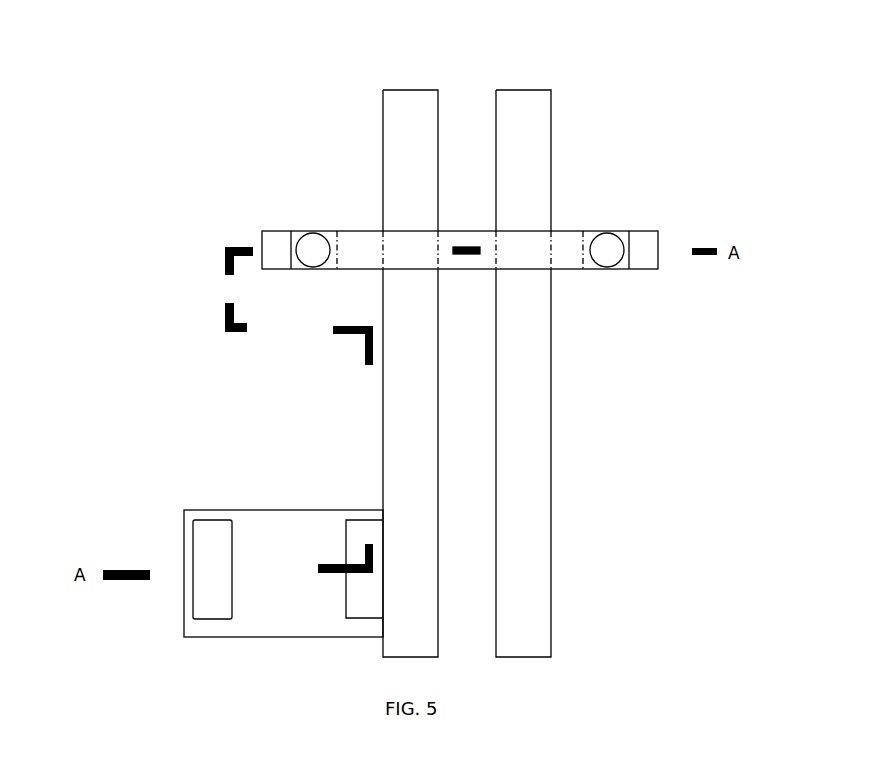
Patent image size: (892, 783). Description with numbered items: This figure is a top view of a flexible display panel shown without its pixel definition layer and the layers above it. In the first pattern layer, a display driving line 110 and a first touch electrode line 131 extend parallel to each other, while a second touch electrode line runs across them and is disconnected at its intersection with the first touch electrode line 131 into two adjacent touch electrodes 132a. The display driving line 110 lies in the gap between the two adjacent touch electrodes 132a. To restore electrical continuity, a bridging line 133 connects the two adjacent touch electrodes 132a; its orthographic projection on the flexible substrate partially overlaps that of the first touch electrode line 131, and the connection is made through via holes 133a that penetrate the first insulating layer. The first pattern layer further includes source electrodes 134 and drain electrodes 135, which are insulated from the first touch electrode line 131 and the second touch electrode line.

The display driving line 110 is at (383, 163).
The first touch electrode line 131 is at (551, 432).
The bridging line 133 is at (455, 230).
The touch electrodes 132a is at (273, 230).
The via holes 133a is at (313, 248).
The source electrodes 134 is at (215, 520).
The drain electrodes 135 is at (367, 520).